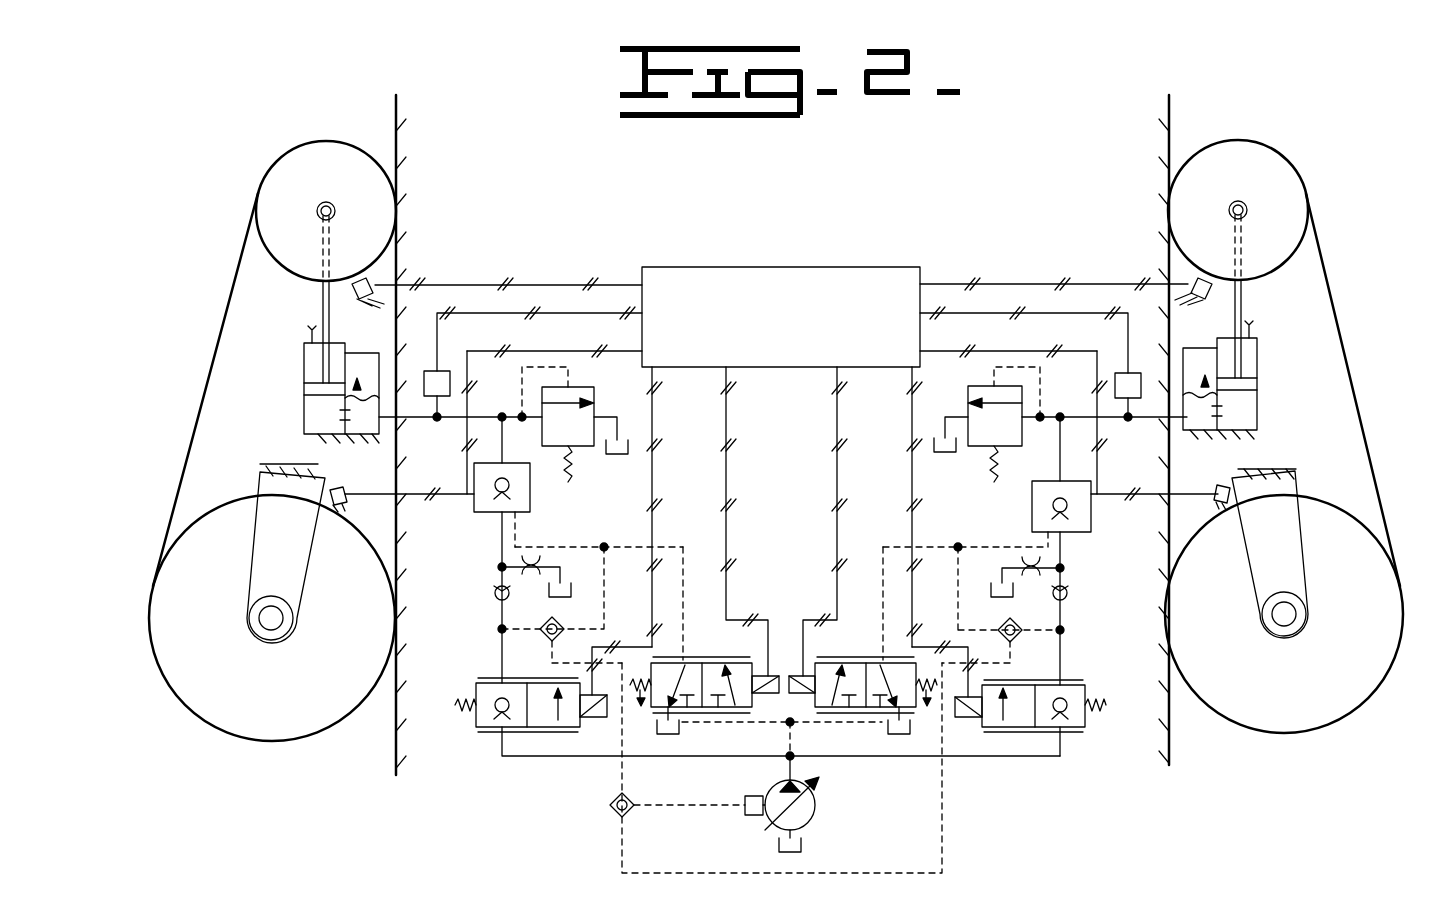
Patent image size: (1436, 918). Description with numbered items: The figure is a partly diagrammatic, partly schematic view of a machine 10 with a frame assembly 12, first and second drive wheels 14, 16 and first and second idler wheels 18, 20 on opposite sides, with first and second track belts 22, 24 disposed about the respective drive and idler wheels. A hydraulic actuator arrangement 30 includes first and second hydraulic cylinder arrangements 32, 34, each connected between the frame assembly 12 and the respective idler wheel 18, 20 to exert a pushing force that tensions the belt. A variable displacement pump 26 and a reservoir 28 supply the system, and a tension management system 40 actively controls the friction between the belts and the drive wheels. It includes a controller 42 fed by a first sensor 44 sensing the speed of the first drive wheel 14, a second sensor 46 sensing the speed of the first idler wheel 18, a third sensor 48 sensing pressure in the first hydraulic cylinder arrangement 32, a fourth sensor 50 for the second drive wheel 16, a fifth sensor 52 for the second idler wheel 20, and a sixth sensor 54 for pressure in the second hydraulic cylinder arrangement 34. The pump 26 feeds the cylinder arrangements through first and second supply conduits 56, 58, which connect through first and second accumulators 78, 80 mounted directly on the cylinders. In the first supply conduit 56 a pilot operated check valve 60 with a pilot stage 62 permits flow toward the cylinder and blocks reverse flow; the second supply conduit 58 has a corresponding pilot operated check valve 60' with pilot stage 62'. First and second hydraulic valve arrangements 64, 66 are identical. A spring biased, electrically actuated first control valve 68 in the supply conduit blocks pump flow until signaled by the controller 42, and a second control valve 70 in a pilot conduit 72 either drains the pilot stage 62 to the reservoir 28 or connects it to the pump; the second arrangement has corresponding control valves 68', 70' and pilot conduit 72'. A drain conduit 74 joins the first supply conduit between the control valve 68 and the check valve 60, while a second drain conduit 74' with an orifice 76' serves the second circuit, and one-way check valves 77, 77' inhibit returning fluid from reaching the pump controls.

The machine 10 is at (540, 125).
The frame assembly 12 is at (262, 470).
The first drive wheel 14 is at (1306, 705).
The second drive wheel 16 is at (287, 685).
The first idler wheel 18 is at (1251, 188).
The second idler wheel 20 is at (335, 190).
The first track belt 22 is at (1333, 300).
The second track belt 24 is at (216, 350).
The variable displacement pump 26 is at (815, 805).
The reservoir 28 is at (562, 595).
The hydraulic actuator arrangement 30 is at (251, 390).
The first hydraulic cylinder arrangement 32 is at (1258, 370).
The second hydraulic cylinder arrangement 34 is at (304, 355).
The tension management system 40 is at (566, 224).
The controller 42 is at (769, 358).
The first sensor 44 is at (1217, 486).
The second sensor 46 is at (1192, 298).
The third sensor 48 is at (1128, 373).
The fourth sensor 50 is at (346, 503).
The fifth sensor 52 is at (356, 290).
The sixth sensor 54 is at (437, 371).
The first supply conduit 56 is at (1062, 462).
The second supply conduit 58 is at (502, 428).
The first pilot operated check valve 60 is at (1030, 449).
The pilot operated check valve 60' is at (529, 441).
The pilot stage 62 is at (1034, 514).
The pilot stage 62' is at (533, 505).
The first hydraulic valve arrangement 64 is at (1062, 782).
The second hydraulic valve arrangement 66 is at (476, 803).
The first control valve 68 is at (1009, 712).
The control valve 68' is at (553, 730).
The second control valve 70 is at (863, 579).
The second control valve 70' is at (704, 579).
The pilot conduit 72 is at (878, 578).
The pilot conduit 72' is at (764, 578).
The drain conduit 74 is at (995, 603).
The second drain conduit 74' is at (570, 603).
The orifice 76' is at (489, 567).
The one-way check valve 77 is at (1099, 599).
The one-way check valve 77' is at (461, 595).
The first accumulator 78 is at (1195, 345).
The second accumulator 80 is at (348, 352).